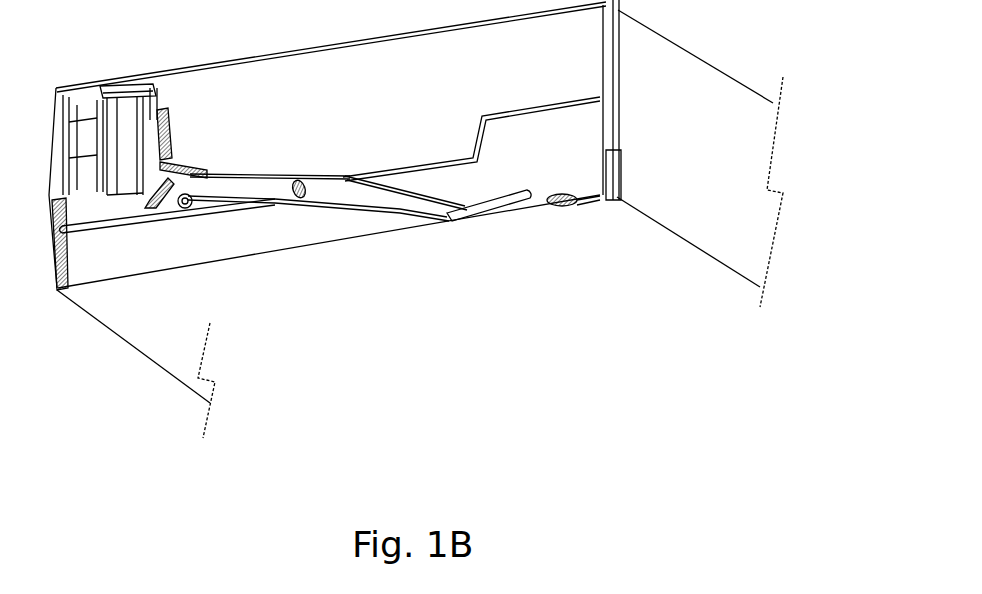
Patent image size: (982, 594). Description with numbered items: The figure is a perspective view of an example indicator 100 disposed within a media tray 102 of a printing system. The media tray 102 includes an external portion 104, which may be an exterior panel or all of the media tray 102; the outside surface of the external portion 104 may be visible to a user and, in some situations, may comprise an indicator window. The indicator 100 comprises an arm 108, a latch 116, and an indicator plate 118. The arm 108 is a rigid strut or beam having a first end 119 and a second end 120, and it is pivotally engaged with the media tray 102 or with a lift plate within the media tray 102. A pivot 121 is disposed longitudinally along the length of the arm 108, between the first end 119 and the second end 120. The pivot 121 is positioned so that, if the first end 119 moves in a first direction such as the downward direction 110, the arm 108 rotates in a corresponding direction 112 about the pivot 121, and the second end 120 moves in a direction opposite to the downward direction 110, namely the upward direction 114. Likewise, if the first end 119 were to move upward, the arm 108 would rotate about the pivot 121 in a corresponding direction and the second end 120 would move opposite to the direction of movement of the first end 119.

The indicator 100 is at (262, 292).
The media tray 102 is at (713, 45).
The external portion 104 is at (455, 74).
The arm 108 is at (402, 228).
The downward direction 110 is at (562, 117).
The corresponding direction 112 is at (273, 165).
The upward direction 114 is at (237, 167).
The latch 116 is at (152, 220).
The indicator plate 118 is at (117, 97).
The first end 119 is at (513, 205).
The second end 120 is at (172, 160).
The pivot 121 is at (293, 200).